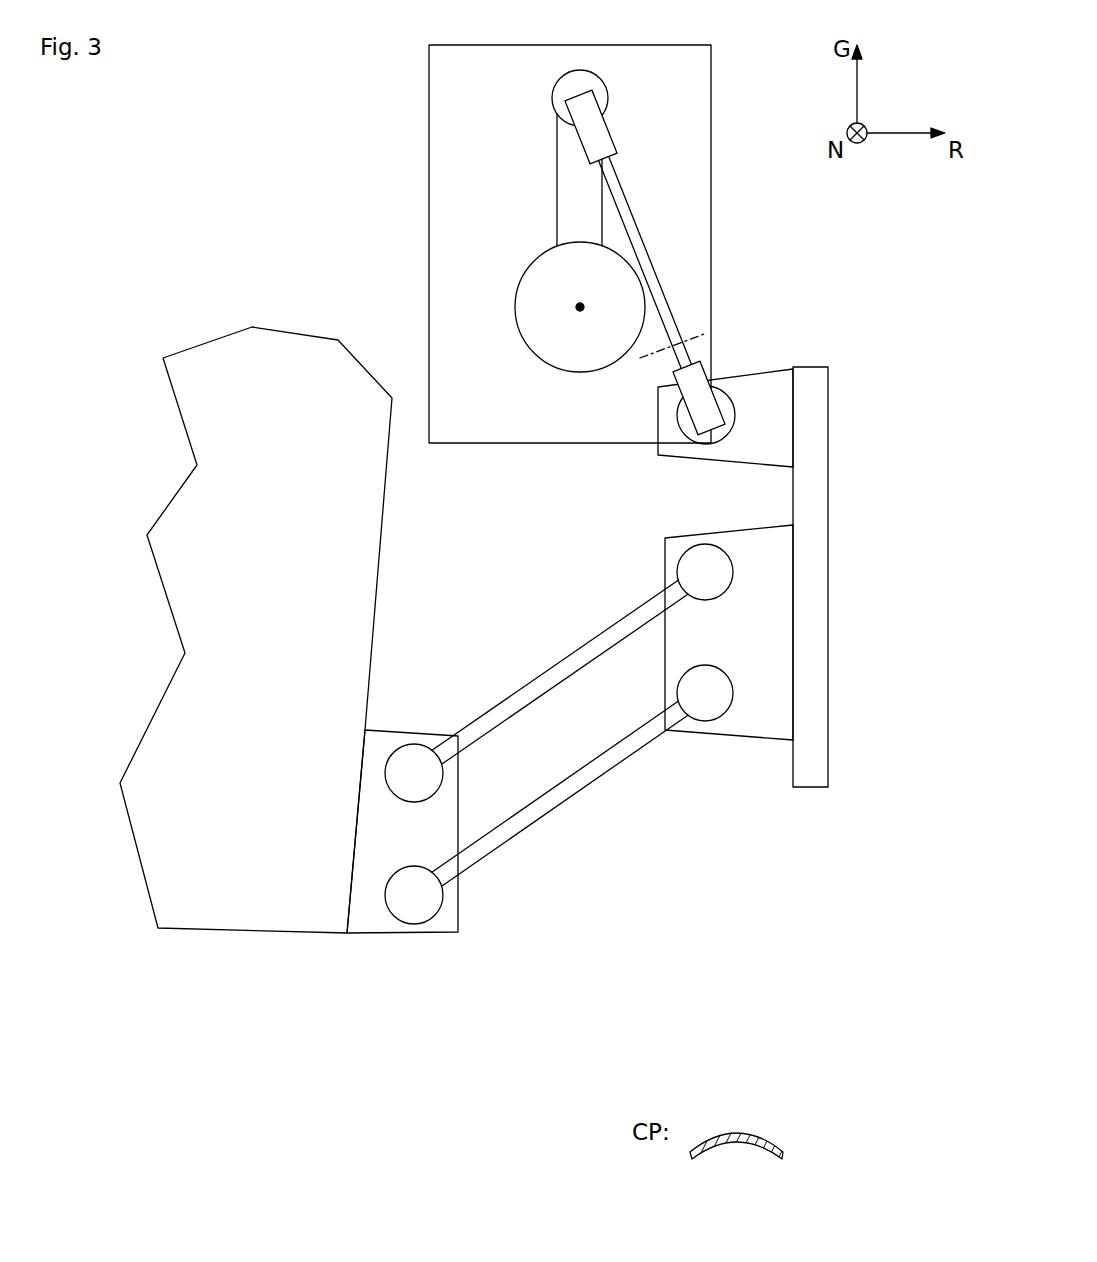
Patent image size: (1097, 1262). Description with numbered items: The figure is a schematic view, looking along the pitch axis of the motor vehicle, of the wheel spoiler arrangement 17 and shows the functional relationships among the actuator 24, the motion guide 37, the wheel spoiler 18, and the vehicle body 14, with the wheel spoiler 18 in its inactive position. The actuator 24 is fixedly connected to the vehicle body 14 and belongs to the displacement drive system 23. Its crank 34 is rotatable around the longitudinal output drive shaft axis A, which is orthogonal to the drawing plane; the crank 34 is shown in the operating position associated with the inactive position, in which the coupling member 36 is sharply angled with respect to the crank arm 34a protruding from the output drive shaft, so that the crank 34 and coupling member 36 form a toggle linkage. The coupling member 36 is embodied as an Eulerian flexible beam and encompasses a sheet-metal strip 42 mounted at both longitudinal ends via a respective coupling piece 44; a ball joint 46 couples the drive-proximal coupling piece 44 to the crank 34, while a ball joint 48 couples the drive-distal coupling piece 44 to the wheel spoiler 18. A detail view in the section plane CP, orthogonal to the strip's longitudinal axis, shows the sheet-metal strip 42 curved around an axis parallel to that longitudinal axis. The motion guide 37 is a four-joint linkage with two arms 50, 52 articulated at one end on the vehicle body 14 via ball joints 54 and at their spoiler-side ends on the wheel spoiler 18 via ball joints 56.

The vehicle body 14 is at (283, 642).
The wheel spoiler arrangement 17 is at (178, 188).
The wheel spoiler 18 is at (823, 602).
The displacement drive system 23 is at (383, 227).
The actuator 24 is at (429, 172).
The crank 34 is at (522, 230).
The crank arm 34a is at (567, 190).
The coupling member 36 is at (698, 226).
The motion guide 37 is at (605, 905).
The sheet-metal strip 42 is at (642, 250).
The coupling piece 44 is at (600, 140).
The ball joint 46 is at (598, 90).
The ball joint 48 is at (727, 416).
The arm 50 is at (607, 762).
The arm 52 is at (545, 690).
The ball joints 54 is at (426, 785).
The ball joints 56 is at (717, 584).
The longitudinal output drive shaft axis A is at (578, 310).
The section plane CP is at (697, 332).